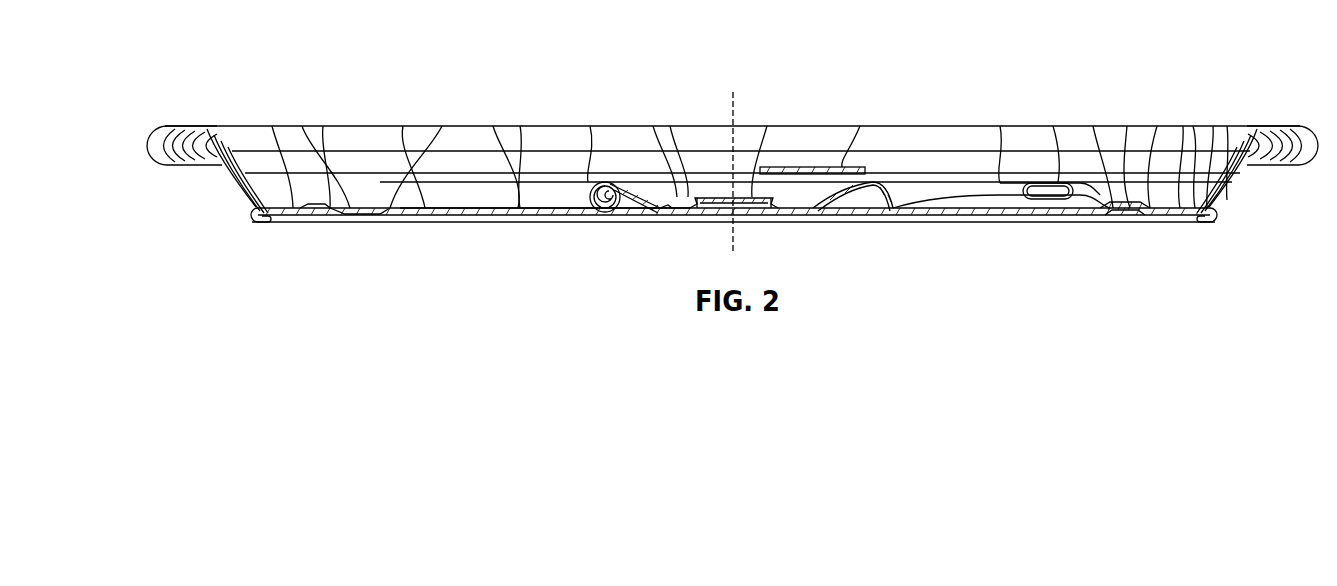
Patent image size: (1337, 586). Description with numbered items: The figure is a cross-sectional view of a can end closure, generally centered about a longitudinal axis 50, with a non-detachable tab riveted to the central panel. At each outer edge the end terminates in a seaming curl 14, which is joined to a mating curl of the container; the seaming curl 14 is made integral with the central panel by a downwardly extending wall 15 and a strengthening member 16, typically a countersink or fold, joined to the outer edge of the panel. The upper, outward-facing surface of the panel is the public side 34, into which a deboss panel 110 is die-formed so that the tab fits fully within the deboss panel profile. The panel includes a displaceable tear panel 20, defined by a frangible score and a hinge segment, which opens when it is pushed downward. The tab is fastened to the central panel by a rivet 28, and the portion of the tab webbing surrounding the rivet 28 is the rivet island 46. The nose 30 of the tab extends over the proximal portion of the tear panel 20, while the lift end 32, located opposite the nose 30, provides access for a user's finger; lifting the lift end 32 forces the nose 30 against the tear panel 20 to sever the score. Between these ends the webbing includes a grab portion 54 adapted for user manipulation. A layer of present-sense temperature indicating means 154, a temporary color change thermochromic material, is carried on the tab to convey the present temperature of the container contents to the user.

The seaming curl 14 is at (152, 165).
The downwardly extending wall 15 is at (243, 170).
The strengthening member 16 is at (250, 211).
The tear panel 20 is at (390, 208).
The public side 34 is at (308, 210).
The deboss panel 110 is at (518, 208).
The nose 30 is at (590, 183).
The rivet island 46 is at (677, 200).
The longitudinal axis 50 is at (732, 108).
The rivet 28 is at (750, 197).
The present-sense temperature indicating means 154 is at (842, 167).
The grab portion 54 is at (1000, 184).
The lift end 32 is at (1058, 182).